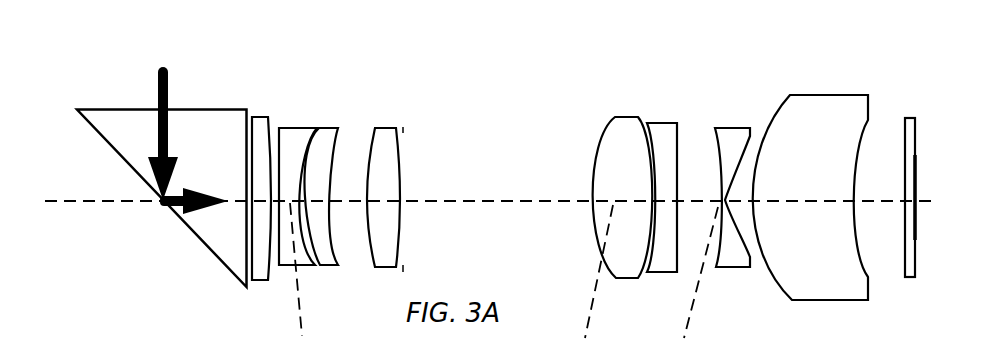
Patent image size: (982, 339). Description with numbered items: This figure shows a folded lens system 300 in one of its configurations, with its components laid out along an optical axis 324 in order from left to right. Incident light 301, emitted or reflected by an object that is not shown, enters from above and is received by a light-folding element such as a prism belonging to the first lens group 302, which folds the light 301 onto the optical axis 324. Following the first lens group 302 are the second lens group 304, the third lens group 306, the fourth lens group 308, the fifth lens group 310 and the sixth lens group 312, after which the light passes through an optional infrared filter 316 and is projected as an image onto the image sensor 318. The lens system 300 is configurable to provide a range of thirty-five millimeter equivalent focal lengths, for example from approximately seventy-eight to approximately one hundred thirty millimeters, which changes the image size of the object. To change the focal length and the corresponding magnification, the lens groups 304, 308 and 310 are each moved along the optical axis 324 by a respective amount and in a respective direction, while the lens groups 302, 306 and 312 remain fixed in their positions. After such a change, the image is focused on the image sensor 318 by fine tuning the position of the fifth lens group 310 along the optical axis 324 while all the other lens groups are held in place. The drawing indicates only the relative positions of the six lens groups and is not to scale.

The lens system 300 is at (68, 87).
The incident light 301 is at (163, 66).
The first lens group 302 is at (68, 125).
The second lens group 304 is at (282, 127).
The third lens group 306 is at (373, 125).
The fourth lens group 308 is at (610, 113).
The fifth lens group 310 is at (713, 125).
The sixth lens group 312 is at (773, 103).
The infrared filter 316 is at (908, 117).
The image sensor 318 is at (916, 241).
The optical axis 324 is at (420, 200).